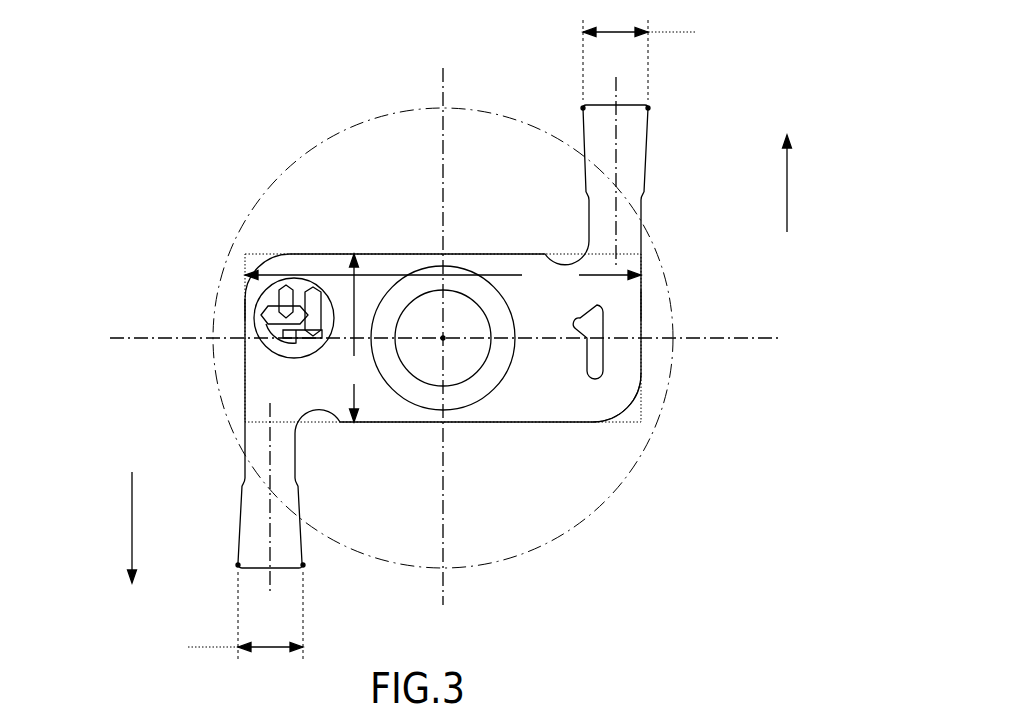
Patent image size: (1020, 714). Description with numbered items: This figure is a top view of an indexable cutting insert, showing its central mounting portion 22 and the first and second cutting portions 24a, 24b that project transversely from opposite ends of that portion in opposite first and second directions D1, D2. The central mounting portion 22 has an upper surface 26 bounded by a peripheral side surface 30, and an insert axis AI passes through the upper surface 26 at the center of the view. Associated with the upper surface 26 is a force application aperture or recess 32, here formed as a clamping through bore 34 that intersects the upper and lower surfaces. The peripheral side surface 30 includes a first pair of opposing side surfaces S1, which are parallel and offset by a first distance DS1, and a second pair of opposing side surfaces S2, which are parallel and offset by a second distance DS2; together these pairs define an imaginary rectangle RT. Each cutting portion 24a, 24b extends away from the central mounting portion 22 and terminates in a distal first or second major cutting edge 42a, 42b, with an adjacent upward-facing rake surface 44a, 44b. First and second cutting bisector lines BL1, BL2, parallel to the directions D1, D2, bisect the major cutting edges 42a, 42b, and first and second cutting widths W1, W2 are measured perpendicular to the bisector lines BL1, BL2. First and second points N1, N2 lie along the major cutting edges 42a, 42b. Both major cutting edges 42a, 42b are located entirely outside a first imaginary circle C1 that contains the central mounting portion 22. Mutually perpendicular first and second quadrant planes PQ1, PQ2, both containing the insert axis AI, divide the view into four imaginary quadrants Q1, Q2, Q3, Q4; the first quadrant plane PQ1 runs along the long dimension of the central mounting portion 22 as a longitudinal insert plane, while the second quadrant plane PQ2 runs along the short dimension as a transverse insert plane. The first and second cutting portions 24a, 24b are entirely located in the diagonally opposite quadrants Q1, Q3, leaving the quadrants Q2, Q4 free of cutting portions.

The central mounting portion 22 is at (548, 426).
The first cutting portion 24a is at (280, 473).
The second cutting portion 24b is at (628, 209).
The upper surface 26 is at (571, 404).
The peripheral side surface 30 is at (312, 250).
The force application aperture or recess 32 is at (426, 311).
The clamping through bore 34 is at (438, 365).
The first major cutting edge 42a is at (287, 573).
The second major cutting edge 42b is at (583, 106).
The first rake surface 44a is at (285, 542).
The second rake surface 44b is at (597, 125).
The insert axis AI is at (444, 339).
The first cutting bisector line BL1 is at (270, 515).
The second cutting bisector line BL2 is at (619, 158).
The first imaginary circle C1 is at (615, 488).
The first direction D1 is at (133, 544).
The second direction D2 is at (790, 163).
The first distance DS1 is at (443, 277).
The second distance DS2 is at (350, 338).
The first point N1 is at (237, 566).
The second point N2 is at (648, 106).
The first quadrant plane PQ1 is at (446, 339).
The second quadrant plane PQ2 is at (445, 340).
The first imaginary quadrant Q1 is at (374, 514).
The second imaginary quadrant Q2 is at (368, 154).
The third imaginary quadrant Q3 is at (523, 154).
The fourth imaginary quadrant Q4 is at (523, 514).
The imaginary rectangle RT is at (627, 424).
The first pair of side surfaces S1 is at (243, 302).
The second pair of side surfaces S2 is at (333, 253).
The first cutting width W1 is at (230, 616).
The second cutting width W2 is at (658, 59).